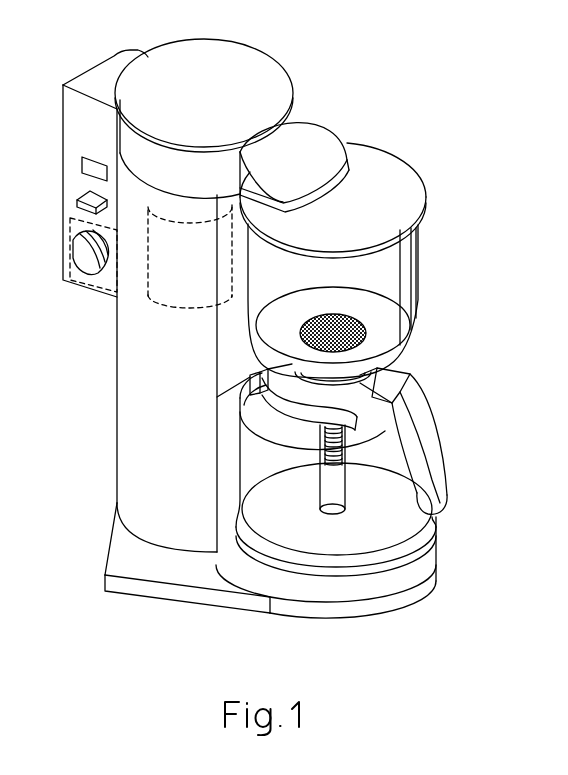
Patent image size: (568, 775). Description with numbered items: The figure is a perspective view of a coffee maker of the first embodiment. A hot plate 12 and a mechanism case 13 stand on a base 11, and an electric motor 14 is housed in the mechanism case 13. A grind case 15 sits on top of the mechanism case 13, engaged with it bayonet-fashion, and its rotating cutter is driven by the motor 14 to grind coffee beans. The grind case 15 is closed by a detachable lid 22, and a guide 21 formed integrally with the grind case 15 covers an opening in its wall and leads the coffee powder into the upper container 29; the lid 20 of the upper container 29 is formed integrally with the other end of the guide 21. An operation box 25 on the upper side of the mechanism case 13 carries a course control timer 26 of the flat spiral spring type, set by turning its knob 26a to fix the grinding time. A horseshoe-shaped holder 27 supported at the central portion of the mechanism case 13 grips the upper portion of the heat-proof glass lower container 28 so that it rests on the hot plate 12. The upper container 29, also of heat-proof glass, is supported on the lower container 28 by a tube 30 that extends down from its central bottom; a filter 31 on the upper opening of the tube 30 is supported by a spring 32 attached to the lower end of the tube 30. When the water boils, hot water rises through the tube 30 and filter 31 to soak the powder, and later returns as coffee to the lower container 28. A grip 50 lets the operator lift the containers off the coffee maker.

The base 11 is at (217, 580).
The hot plate 12 is at (428, 555).
The mechanism case 13 is at (132, 395).
The electric motor 14 is at (147, 307).
The grind case 15 is at (130, 144).
The lid 20 is at (400, 170).
The guide 21 is at (310, 133).
The lid 22 is at (248, 58).
The operation box 25 is at (66, 205).
The course control timer 26 is at (62, 230).
The knob 26a is at (73, 258).
The horseshoe-shaped holder 27 is at (288, 410).
The lower container 28 is at (340, 560).
The upper container 29 is at (407, 273).
The tube 30 is at (348, 487).
The filter 31 is at (366, 331).
The spring 32 is at (318, 467).
The grip 50 is at (432, 480).